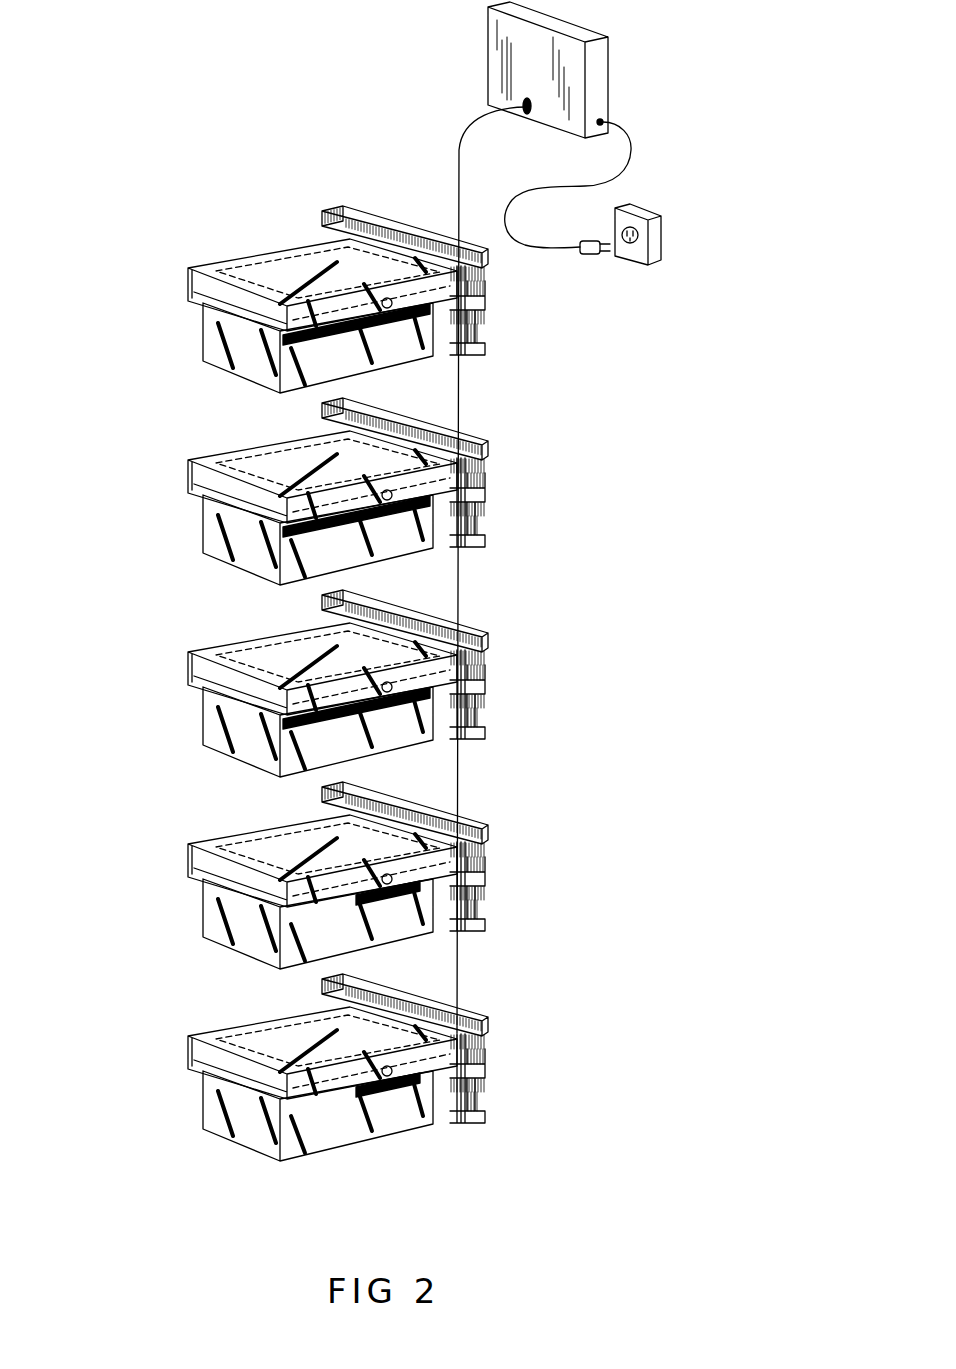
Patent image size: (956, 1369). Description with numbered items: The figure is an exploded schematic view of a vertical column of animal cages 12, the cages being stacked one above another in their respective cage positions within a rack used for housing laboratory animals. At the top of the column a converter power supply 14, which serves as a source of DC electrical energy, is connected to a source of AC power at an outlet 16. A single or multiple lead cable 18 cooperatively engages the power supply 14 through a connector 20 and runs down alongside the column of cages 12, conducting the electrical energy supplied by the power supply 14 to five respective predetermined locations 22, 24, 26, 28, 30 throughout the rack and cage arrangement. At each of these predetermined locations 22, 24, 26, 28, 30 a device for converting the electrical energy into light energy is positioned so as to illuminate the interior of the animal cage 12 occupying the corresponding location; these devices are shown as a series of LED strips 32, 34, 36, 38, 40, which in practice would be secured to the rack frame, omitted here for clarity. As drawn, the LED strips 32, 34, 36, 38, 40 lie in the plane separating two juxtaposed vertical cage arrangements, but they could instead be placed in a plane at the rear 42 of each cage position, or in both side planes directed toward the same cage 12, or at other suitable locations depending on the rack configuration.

The animal cages 12 is at (197, 732).
The converter power supply 14 is at (490, 98).
The outlet 16 is at (640, 256).
The cable 18 is at (460, 423).
The connector 20 is at (530, 113).
The predetermined location 22 is at (403, 326).
The predetermined location 24 is at (403, 518).
The predetermined location 26 is at (403, 710).
The predetermined location 28 is at (410, 916).
The predetermined location 30 is at (410, 1108).
The LED strip 32 is at (343, 330).
The LED strip 34 is at (343, 522).
The LED strip 36 is at (343, 714).
The LED strip 38 is at (363, 924).
The LED strip 40 is at (363, 1116).
The rear of the cage position 42 is at (528, 664).